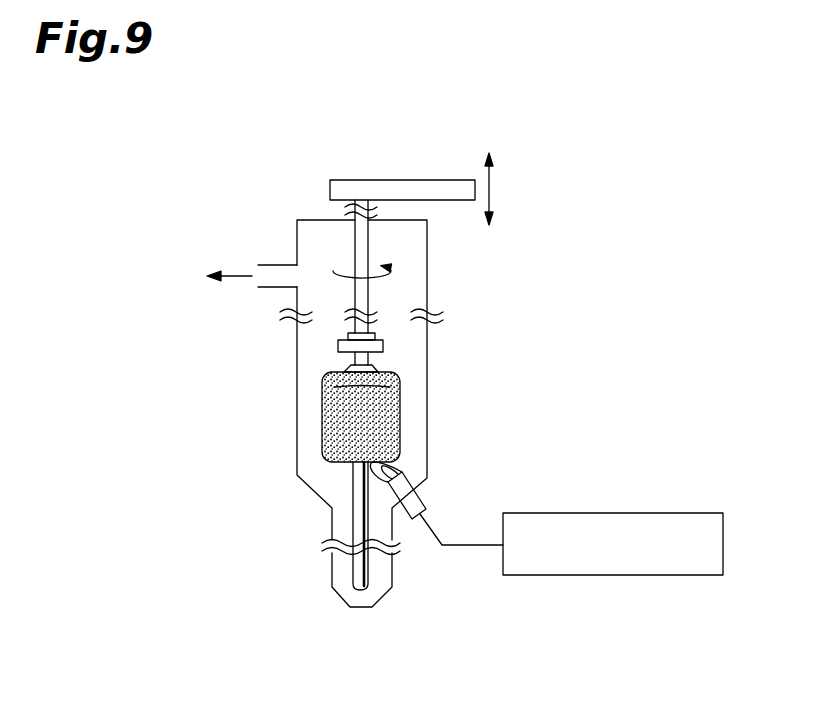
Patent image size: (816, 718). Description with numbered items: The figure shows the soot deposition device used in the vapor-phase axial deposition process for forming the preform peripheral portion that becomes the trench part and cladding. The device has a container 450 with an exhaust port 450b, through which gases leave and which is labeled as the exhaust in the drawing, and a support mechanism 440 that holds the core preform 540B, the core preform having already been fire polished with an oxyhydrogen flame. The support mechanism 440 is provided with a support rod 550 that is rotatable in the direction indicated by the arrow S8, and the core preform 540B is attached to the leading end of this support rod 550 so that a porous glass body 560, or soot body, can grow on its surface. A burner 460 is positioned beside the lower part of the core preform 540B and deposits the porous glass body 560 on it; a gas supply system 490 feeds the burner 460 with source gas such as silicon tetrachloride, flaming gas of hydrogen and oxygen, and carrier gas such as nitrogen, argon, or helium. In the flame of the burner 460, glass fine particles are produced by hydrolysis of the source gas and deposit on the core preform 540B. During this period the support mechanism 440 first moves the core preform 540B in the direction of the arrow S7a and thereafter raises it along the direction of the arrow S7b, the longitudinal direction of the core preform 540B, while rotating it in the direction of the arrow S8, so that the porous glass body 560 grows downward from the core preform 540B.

The support mechanism 440 is at (397, 188).
The container 450 is at (427, 277).
The exhaust port 450b is at (273, 263).
The burner 460 is at (423, 493).
The gas supply system 490 is at (663, 513).
The core preform 540B is at (355, 521).
The support rod 550 is at (370, 358).
The porous glass body 560 is at (400, 413).
The direction of moving the core preform S7a is at (489, 205).
The direction of raising the core preform S7b is at (489, 170).
The rotation direction of the support rod S8 is at (392, 270).